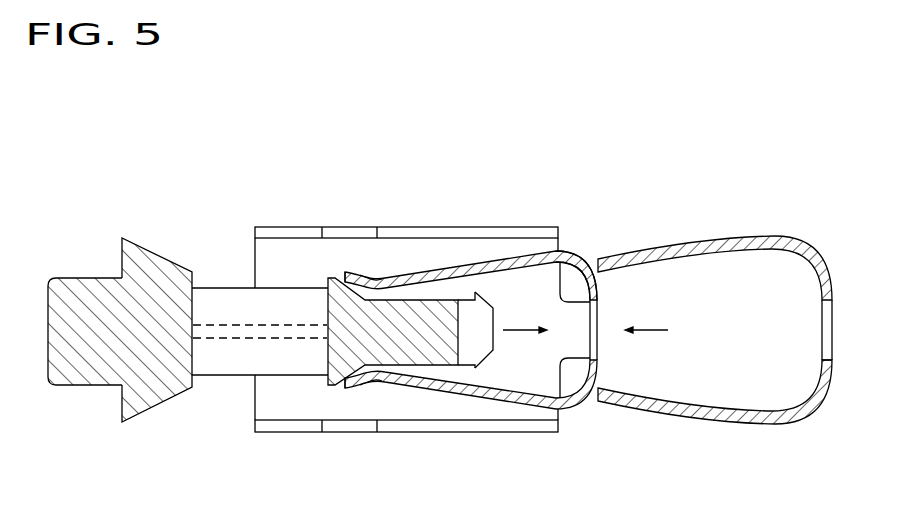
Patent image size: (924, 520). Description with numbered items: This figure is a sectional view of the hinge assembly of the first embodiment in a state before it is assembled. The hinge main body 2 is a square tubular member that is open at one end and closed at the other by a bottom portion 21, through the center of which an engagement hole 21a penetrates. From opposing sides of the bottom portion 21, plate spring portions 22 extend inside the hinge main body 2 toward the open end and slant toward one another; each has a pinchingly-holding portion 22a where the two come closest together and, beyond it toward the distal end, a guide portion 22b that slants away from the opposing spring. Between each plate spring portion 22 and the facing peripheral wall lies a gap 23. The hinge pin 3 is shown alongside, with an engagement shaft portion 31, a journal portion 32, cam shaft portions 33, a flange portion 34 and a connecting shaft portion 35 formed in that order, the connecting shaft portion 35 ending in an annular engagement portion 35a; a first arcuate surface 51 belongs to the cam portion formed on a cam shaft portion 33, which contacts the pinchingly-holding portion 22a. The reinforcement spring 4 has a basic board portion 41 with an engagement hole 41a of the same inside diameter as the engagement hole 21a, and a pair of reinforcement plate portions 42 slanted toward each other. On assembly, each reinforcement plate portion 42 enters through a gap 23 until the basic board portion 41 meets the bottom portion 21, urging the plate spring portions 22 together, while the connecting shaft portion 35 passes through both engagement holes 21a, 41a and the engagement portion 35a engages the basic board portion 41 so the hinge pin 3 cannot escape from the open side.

The hinge main body 2 is at (485, 222).
The hinge pin 3 is at (188, 306).
The reinforcement spring 4 is at (718, 300).
The bottom portion 21 is at (603, 266).
The engagement hole 21a is at (596, 360).
The plate spring portion 22 is at (452, 265).
The pinchingly-holding portion 22a is at (377, 279).
The guide portion 22b is at (360, 272).
The gap 23 is at (564, 252).
The engagement shaft portion 31 is at (80, 386).
The journal portion 32 is at (148, 414).
The cam shaft portion 33 is at (235, 287).
The flange portion 34 is at (328, 386).
The connecting shaft portion 35 is at (418, 368).
The engagement portion 35a is at (477, 365).
The basic board portion 41 is at (836, 282).
The engagement hole 41a is at (828, 353).
The reinforcement plate portion 42 is at (700, 248).
The first arcuate surface 51 is at (235, 340).